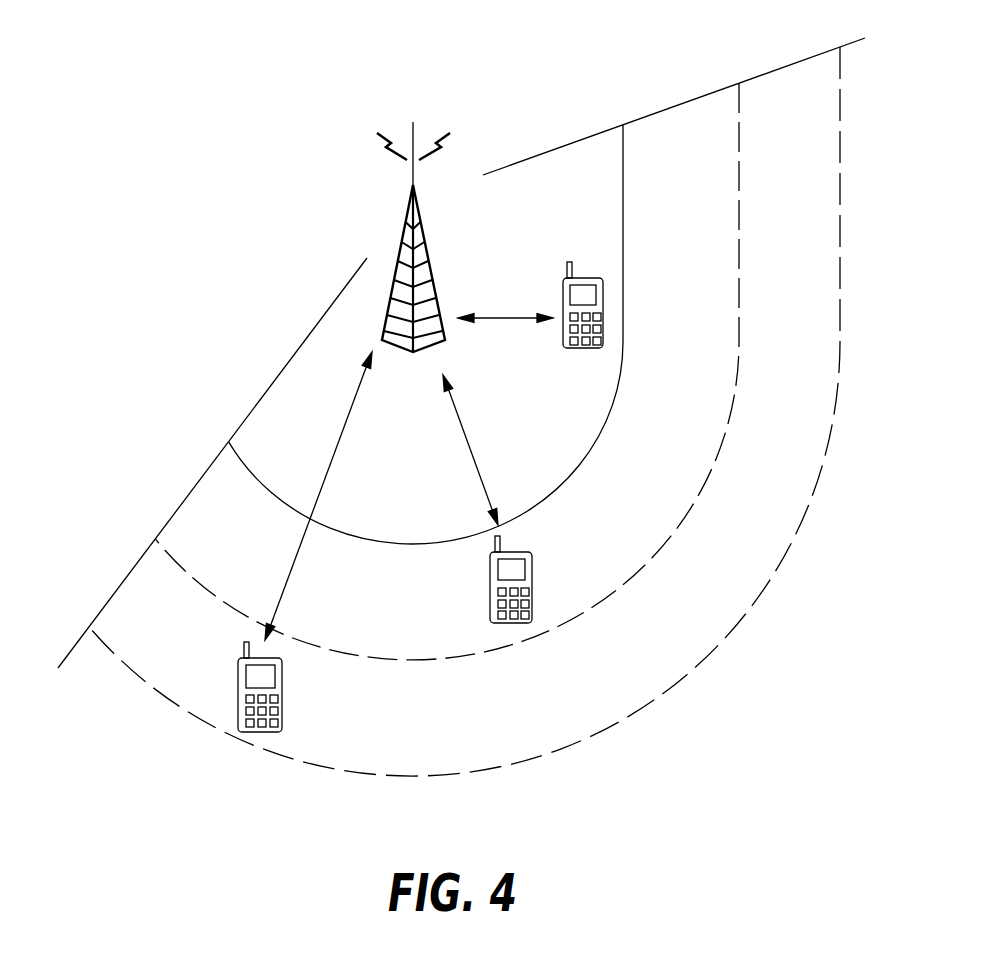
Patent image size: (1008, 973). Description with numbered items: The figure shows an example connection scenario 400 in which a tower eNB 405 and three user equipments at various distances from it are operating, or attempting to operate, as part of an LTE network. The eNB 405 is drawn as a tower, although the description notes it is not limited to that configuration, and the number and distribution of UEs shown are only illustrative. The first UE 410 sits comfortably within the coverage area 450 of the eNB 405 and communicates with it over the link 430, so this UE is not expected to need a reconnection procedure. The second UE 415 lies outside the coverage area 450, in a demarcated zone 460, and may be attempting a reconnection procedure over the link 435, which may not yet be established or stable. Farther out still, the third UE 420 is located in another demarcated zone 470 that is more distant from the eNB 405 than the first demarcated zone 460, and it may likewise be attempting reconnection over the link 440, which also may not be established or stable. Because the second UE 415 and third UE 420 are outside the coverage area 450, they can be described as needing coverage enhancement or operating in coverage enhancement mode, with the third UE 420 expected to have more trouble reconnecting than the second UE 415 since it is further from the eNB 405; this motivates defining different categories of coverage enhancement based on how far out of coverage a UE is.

The connection scenario 400 is at (718, 820).
The tower eNB 405 is at (407, 221).
The first UE 410 is at (586, 276).
The second UE 415 is at (488, 593).
The third UE 420 is at (236, 680).
The link 430 is at (508, 315).
The link 435 is at (471, 449).
The link 440 is at (318, 496).
The coverage area 450 is at (537, 166).
The demarcated zone 460 is at (673, 119).
The demarcated zone 470 is at (783, 82).